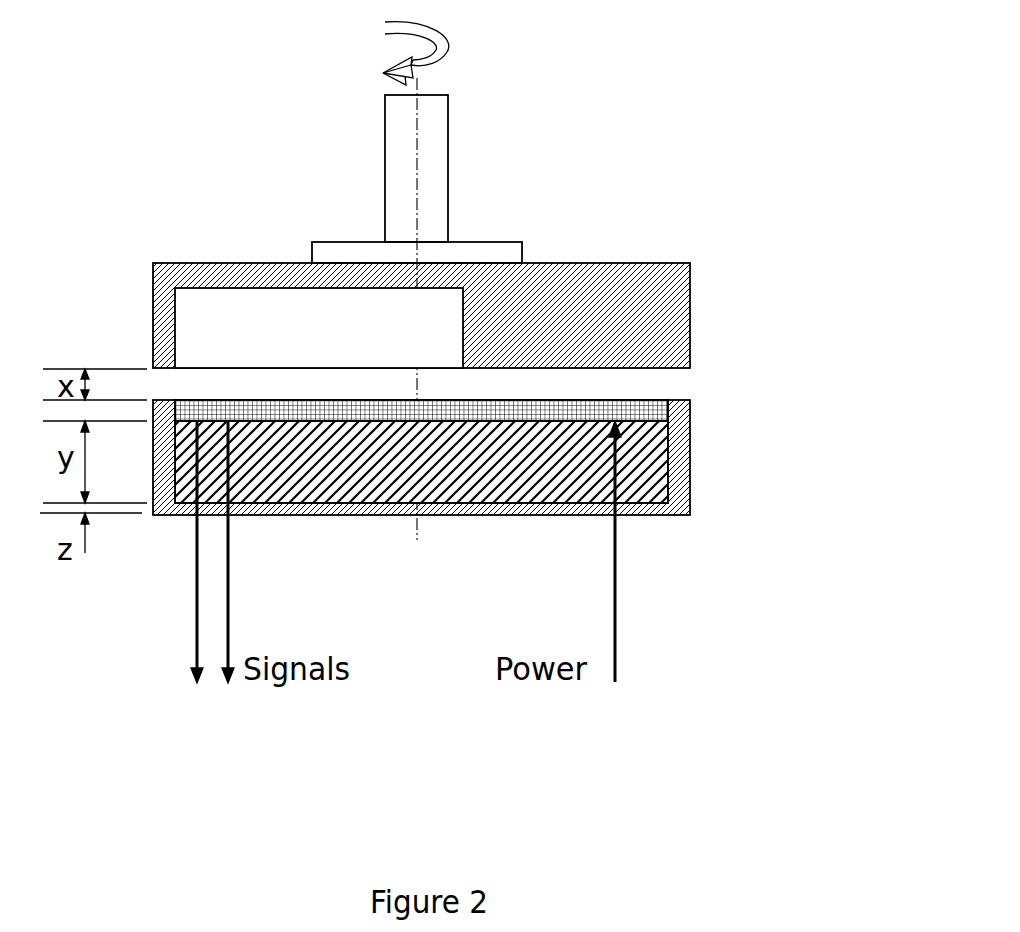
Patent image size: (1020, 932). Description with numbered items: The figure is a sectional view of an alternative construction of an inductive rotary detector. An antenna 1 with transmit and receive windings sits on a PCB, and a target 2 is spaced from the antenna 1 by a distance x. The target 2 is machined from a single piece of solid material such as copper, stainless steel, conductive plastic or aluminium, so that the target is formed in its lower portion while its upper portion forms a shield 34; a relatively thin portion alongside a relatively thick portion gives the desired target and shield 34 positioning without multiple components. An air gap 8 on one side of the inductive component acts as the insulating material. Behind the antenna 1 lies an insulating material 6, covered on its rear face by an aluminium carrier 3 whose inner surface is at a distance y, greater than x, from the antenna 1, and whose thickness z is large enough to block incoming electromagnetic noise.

The shield 34 is at (600, 263).
The target 2 is at (607, 358).
The air gap 8 is at (295, 337).
The antenna 1 is at (603, 412).
The insulating material 6 is at (650, 443).
The aluminium carrier 3 is at (668, 515).